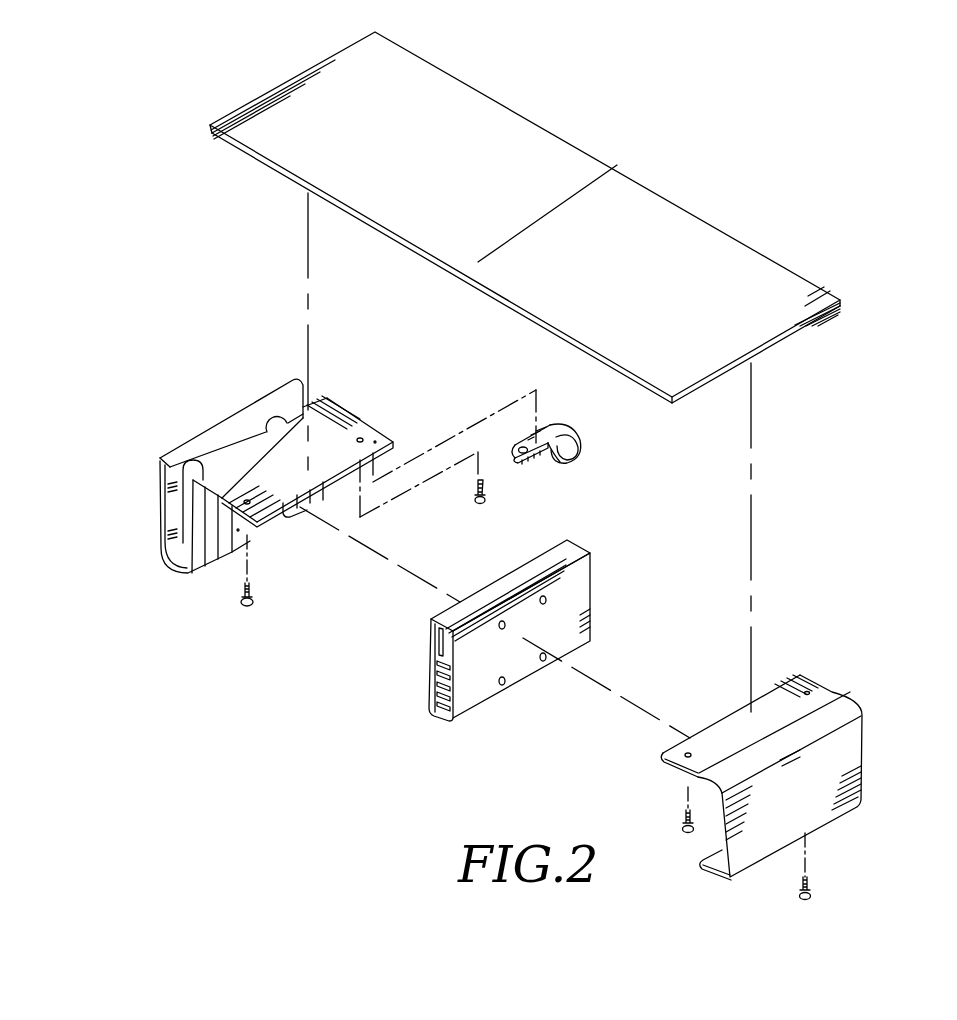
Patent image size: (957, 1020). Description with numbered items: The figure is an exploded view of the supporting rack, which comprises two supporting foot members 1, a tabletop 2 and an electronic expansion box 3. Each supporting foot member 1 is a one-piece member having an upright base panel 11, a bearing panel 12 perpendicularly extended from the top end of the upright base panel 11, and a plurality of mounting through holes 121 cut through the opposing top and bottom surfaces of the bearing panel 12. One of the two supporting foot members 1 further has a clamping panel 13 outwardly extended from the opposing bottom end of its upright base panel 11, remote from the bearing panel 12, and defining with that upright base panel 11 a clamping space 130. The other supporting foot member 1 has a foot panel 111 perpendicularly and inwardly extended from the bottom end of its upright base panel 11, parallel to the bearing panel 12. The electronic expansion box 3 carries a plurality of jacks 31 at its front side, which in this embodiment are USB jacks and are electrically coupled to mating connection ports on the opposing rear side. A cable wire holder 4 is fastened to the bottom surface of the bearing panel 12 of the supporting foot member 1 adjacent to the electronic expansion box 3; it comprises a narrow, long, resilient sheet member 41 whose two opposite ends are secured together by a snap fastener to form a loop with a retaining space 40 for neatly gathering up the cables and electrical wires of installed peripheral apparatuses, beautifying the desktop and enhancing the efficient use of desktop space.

The supporting foot member 1 is at (706, 690).
The upright base panel 11 is at (853, 757).
The bearing panel 12 is at (726, 737).
The mounting through holes 121 is at (685, 754).
The foot panel 111 is at (713, 860).
The tabletop 2 is at (602, 185).
The electronic expansion box 3 is at (535, 656).
The jacks 31 is at (445, 710).
The cable wire holder 4 is at (607, 450).
The retaining space 40 is at (573, 454).
The resilient sheet member 41 is at (557, 424).
The clamping panel 13 is at (348, 481).
The clamping space 130 is at (255, 426).